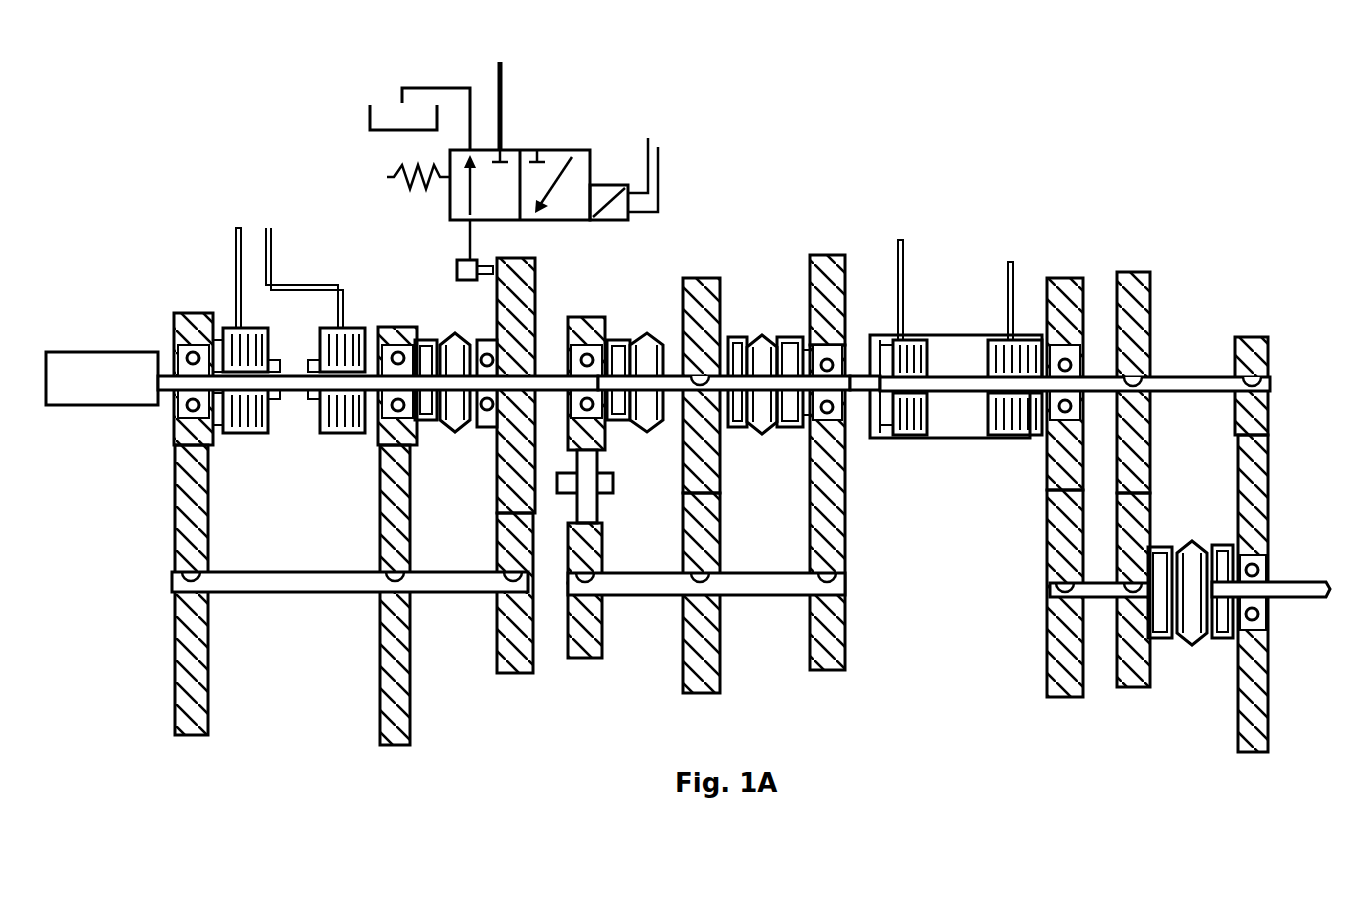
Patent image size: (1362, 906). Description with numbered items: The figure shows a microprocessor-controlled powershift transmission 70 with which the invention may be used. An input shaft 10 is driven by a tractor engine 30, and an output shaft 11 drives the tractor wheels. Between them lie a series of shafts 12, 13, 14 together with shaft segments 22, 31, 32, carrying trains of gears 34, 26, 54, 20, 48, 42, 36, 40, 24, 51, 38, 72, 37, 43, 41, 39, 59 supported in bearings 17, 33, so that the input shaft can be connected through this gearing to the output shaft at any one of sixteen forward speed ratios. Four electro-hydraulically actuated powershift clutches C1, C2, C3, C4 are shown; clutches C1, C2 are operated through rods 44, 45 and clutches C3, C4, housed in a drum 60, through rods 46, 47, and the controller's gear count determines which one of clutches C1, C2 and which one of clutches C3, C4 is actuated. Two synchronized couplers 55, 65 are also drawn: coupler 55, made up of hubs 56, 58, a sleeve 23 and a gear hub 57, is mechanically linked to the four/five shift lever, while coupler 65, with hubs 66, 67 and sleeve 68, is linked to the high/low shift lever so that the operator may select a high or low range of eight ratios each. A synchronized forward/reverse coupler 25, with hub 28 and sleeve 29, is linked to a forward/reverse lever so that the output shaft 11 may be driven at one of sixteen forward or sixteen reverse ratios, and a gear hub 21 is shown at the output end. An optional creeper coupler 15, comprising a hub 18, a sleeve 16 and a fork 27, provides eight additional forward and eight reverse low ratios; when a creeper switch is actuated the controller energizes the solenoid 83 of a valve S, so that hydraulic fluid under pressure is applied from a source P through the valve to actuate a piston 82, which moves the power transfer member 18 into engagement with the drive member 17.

The input shaft 10 is at (162, 390).
The output shaft 11 is at (1288, 592).
The first countershaft 12 is at (255, 583).
The second countershaft 13 is at (615, 584).
The third countershaft 14 is at (1097, 597).
The coupler 15 is at (426, 353).
The synchronizer sleeve 16 is at (441, 338).
The drive member 17 is at (483, 430).
The power transfer member 18 is at (462, 432).
The gear 20 is at (532, 650).
The gear hub 21 is at (1270, 350).
The main shaft 22 is at (548, 350).
The synchronizer sleeve 23 is at (723, 437).
The gear 24 is at (845, 635).
The synchronized forward/reverse coupler 25 is at (663, 318).
The gear 26 is at (380, 330).
The shift fork 27 is at (670, 453).
The synchronizer hub 28 is at (653, 436).
The synchronizer sleeve 29 is at (618, 335).
The tractor engine 30 is at (47, 405).
The intermediate shaft 31 is at (860, 360).
The shaft 32 is at (957, 372).
The bearing 33 is at (574, 318).
The gear 34 is at (176, 332).
The gear 36 is at (684, 278).
The gear 37 is at (1047, 490).
The gear 38 is at (602, 640).
The gear 39 is at (1148, 678).
The gear 40 is at (718, 655).
The gear 41 is at (1155, 306).
The gear 42 is at (208, 672).
The gear 43 is at (1047, 625).
The clutch actuator rod 44 is at (236, 255).
The clutch actuator rod 45 is at (270, 245).
The clutch actuator rod 46 is at (903, 262).
The clutch actuator rod 47 is at (1013, 270).
The gear 48 is at (410, 676).
The gear 51 is at (810, 268).
The gear 54 is at (538, 283).
The synchronized coupler 55 is at (767, 340).
The synchronizer hub 56 is at (737, 338).
The gear hub 57 is at (797, 437).
The synchronizer hub 58 is at (786, 437).
The gear 59 is at (1268, 720).
The clutch housing 60 is at (956, 366).
The synchronized coupler 65 is at (1236, 553).
The synchronizer hub 66 is at (1158, 546).
The synchronizer hub 67 is at (1222, 545).
The synchronizer sleeve 68 is at (1185, 643).
The transmission 70 is at (540, 624).
The gear 72 is at (598, 505).
The piston 82 is at (457, 263).
The solenoid 83 is at (596, 186).
The powershift clutch C1 is at (262, 434).
The powershift clutch C2 is at (330, 434).
The powershift clutch C3 is at (928, 438).
The powershift clutch C4 is at (975, 425).
The source P is at (517, 106).
The valve S is at (540, 150).